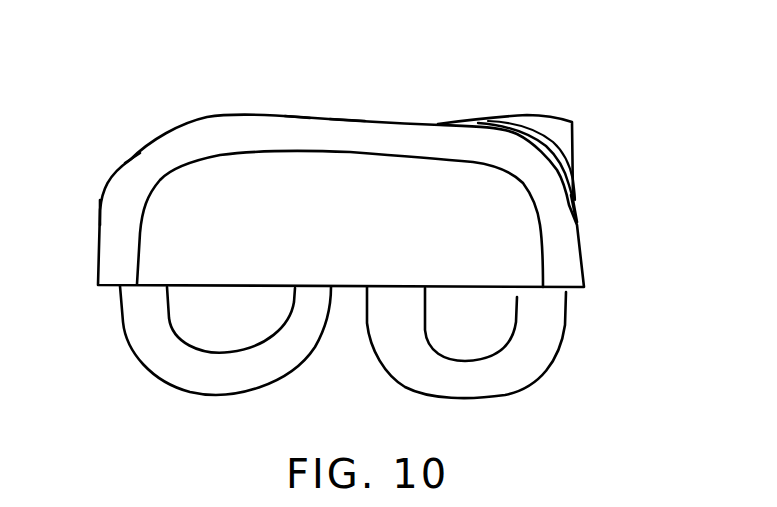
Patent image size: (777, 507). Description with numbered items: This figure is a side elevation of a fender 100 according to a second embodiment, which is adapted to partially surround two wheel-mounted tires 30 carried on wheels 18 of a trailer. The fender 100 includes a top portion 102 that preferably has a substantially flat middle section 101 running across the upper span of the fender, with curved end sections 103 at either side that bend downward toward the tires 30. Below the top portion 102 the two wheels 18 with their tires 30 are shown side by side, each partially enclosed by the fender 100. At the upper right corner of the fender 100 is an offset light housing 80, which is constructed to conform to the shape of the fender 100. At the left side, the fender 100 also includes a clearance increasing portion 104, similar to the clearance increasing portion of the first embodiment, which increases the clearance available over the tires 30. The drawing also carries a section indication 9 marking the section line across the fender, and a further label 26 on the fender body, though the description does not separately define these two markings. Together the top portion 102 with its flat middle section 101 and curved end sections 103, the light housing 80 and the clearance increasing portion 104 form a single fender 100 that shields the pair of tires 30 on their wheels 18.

The fender 100 is at (457, 83).
The frame rim 26 is at (218, 185).
The substantially flat middle section 101 is at (347, 120).
The top portion 102 is at (297, 115).
The curved end sections 103 is at (133, 157).
The clearance increasing portion 104 is at (118, 217).
The offset light housing 80 is at (564, 109).
The section line 9- 9 is at (373, 111).
The wheels 18 is at (207, 327).
The tires 30 is at (263, 370).